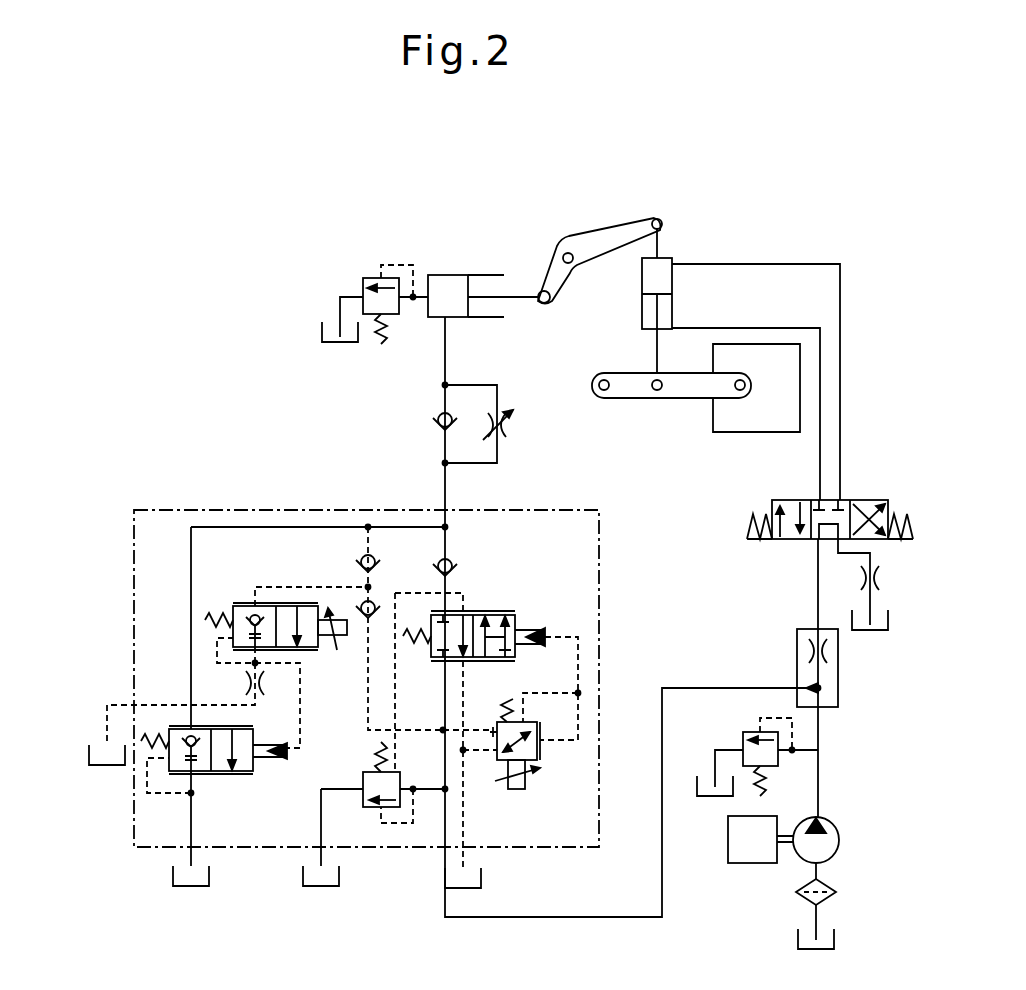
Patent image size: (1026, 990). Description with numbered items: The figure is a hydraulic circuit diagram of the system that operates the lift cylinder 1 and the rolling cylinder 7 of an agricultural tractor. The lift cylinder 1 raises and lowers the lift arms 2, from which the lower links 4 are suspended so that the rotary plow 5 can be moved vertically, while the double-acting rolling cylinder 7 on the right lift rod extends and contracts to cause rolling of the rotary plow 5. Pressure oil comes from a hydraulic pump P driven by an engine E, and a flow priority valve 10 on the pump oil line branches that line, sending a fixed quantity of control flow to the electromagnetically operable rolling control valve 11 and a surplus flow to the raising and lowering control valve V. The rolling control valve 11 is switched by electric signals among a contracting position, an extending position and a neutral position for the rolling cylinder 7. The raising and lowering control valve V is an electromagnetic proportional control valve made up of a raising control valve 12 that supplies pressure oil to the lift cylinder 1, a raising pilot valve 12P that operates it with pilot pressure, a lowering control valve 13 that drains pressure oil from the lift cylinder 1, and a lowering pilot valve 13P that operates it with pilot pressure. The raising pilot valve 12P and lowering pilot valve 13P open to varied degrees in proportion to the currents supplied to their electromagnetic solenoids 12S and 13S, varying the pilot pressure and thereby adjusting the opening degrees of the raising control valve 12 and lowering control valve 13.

The lift cylinder 1 is at (453, 272).
The lift arms 2 is at (605, 225).
The rolling cylinder 7 is at (672, 262).
The lower links 4 is at (679, 398).
The rotary plow 5 is at (743, 432).
The rolling control valve 11 is at (868, 497).
The flow priority valve 10 is at (797, 652).
The hydraulic pump P is at (840, 833).
The engine E is at (752, 863).
The raising and lowering control valve V is at (275, 509).
The lowering pilot valve 13P is at (247, 604).
The electromagnetic solenoid 13S is at (330, 640).
The lowering control valve 13 is at (220, 775).
The raising control valve 12 is at (490, 612).
The raising pilot valve 12P is at (540, 752).
The electromagnetic solenoid 12S is at (513, 789).